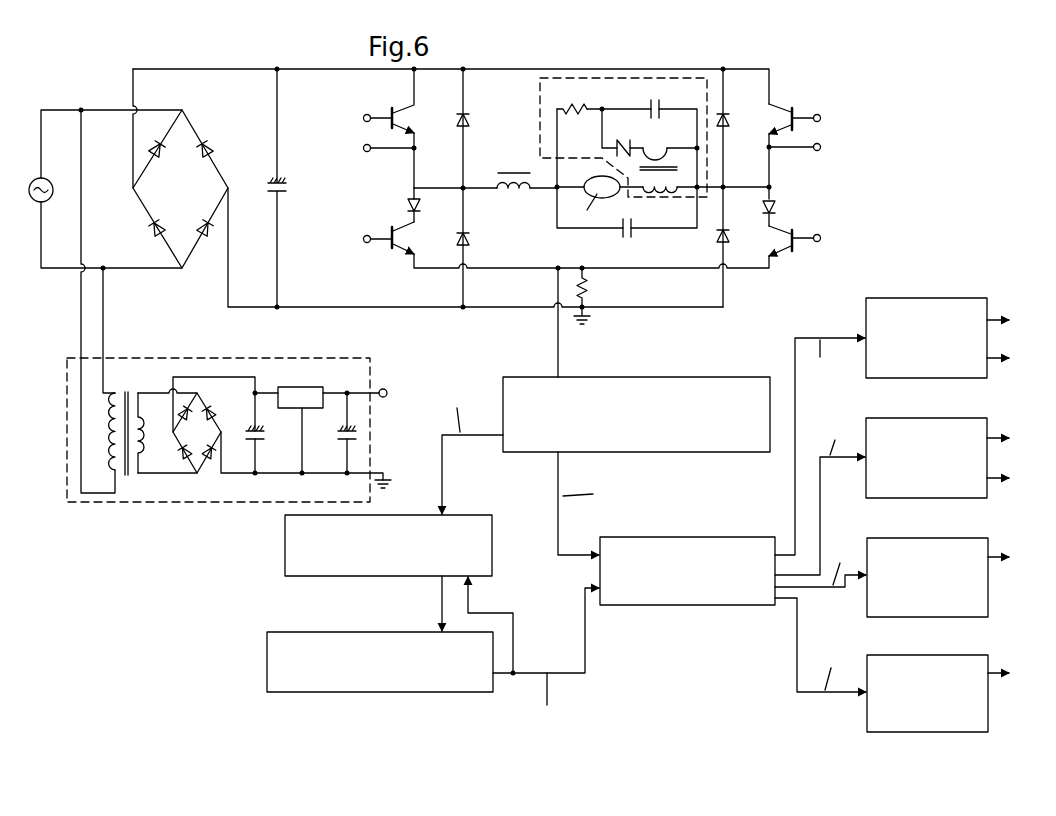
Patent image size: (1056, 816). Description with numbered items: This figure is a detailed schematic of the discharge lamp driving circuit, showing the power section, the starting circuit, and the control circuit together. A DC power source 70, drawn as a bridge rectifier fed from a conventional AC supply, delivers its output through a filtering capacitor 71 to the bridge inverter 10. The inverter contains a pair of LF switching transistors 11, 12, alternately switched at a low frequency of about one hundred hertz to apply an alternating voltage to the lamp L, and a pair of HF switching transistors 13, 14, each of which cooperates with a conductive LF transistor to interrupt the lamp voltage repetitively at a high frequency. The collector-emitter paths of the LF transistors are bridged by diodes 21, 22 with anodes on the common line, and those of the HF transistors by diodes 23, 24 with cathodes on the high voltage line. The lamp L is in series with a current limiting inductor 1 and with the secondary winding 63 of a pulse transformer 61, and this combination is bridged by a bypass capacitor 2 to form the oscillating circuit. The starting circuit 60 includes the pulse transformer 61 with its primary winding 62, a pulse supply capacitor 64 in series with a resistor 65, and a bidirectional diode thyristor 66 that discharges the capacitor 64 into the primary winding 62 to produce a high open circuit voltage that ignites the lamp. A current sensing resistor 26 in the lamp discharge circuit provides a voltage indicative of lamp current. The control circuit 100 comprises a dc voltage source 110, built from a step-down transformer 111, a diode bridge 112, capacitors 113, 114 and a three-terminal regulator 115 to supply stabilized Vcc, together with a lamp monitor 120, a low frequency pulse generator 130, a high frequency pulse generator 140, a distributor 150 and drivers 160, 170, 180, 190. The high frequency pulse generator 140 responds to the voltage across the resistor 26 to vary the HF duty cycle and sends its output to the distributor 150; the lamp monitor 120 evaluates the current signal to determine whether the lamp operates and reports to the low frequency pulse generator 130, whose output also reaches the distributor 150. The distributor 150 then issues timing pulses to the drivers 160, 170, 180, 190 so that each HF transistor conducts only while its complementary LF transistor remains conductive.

The current limiting inductor 1 is at (510, 196).
The bypass capacitor 2 is at (625, 237).
The bridge inverter 10 is at (488, 203).
The LF switching transistor 11 is at (797, 249).
The LF switching transistor 12 is at (391, 247).
The HF switching transistor 13 is at (389, 110).
The HF switching transistor 14 is at (794, 109).
The diode 21 is at (731, 239).
The diode 22 is at (471, 238).
The diode 23 is at (471, 121).
The diode 24 is at (731, 121).
The current sensing resistor 26 is at (587, 288).
The starting circuit 60 is at (538, 105).
The pulse transformer 61 is at (679, 175).
The primary winding 62 is at (659, 152).
The secondary winding 63 is at (656, 195).
The pulse supply capacitor 64 is at (655, 100).
The resistor 65 is at (572, 105).
The bidirectional diode thyristor 66 is at (617, 142).
The DC power source 70 is at (184, 104).
The filtering capacitor 71 is at (276, 190).
The control circuit 100 is at (576, 497).
The dc voltage source 110 is at (226, 434).
The step-down transformer 111 is at (125, 390).
The diode bridge 112 is at (199, 391).
The capacitor 113 is at (249, 440).
The capacitor 114 is at (356, 436).
The three-terminal regulator 115 is at (301, 388).
The lamp monitor 120 is at (287, 556).
The low frequency pulse generator 130 is at (280, 692).
The high frequency pulse generator 140 is at (730, 379).
The distributor 150 is at (663, 606).
The driver 160 is at (958, 662).
The driver 170 is at (955, 545).
The driver 180 is at (952, 302).
The driver 190 is at (960, 423).